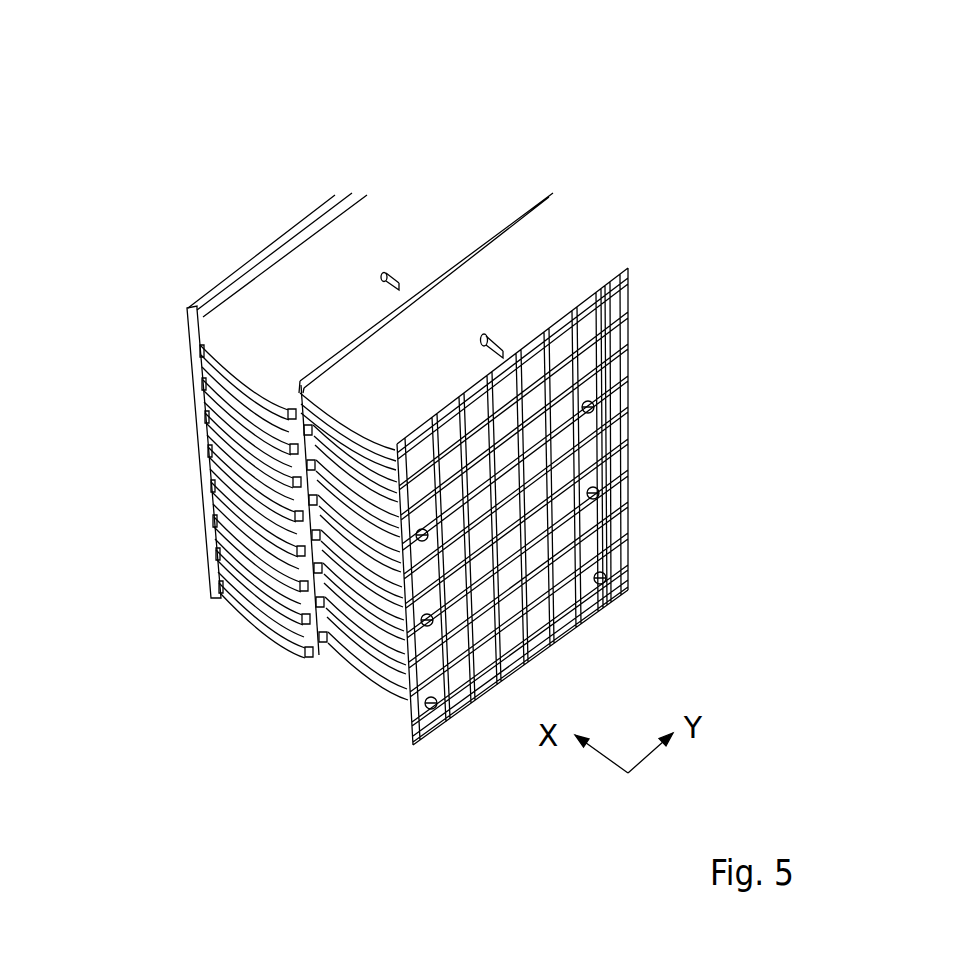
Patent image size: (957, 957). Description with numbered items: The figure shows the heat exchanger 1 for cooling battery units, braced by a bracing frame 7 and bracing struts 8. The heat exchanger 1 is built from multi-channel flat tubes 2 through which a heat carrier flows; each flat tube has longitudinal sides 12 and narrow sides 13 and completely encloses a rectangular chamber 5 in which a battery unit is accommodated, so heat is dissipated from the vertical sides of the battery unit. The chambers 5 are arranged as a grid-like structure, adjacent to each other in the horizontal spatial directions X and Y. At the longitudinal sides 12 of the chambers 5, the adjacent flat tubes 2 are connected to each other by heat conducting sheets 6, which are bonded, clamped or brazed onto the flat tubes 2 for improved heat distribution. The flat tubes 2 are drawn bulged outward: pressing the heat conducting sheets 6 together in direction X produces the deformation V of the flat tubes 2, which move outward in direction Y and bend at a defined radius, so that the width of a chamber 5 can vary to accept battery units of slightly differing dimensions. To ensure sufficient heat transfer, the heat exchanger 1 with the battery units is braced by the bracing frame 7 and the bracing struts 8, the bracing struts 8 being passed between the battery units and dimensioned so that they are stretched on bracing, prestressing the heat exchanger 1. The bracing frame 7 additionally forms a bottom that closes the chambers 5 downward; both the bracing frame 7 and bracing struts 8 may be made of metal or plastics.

The heat exchanger 1 is at (743, 133).
The multi-channel flat tubes 2 is at (332, 622).
The chambers 5 is at (523, 293).
The heat conducting sheets 6 is at (290, 303).
The bracing frame 7 is at (607, 442).
The bracing struts 8 is at (492, 338).
The longitudinal sides 12 is at (337, 203).
The narrow sides 13 is at (372, 635).
The deformation V is at (220, 438).